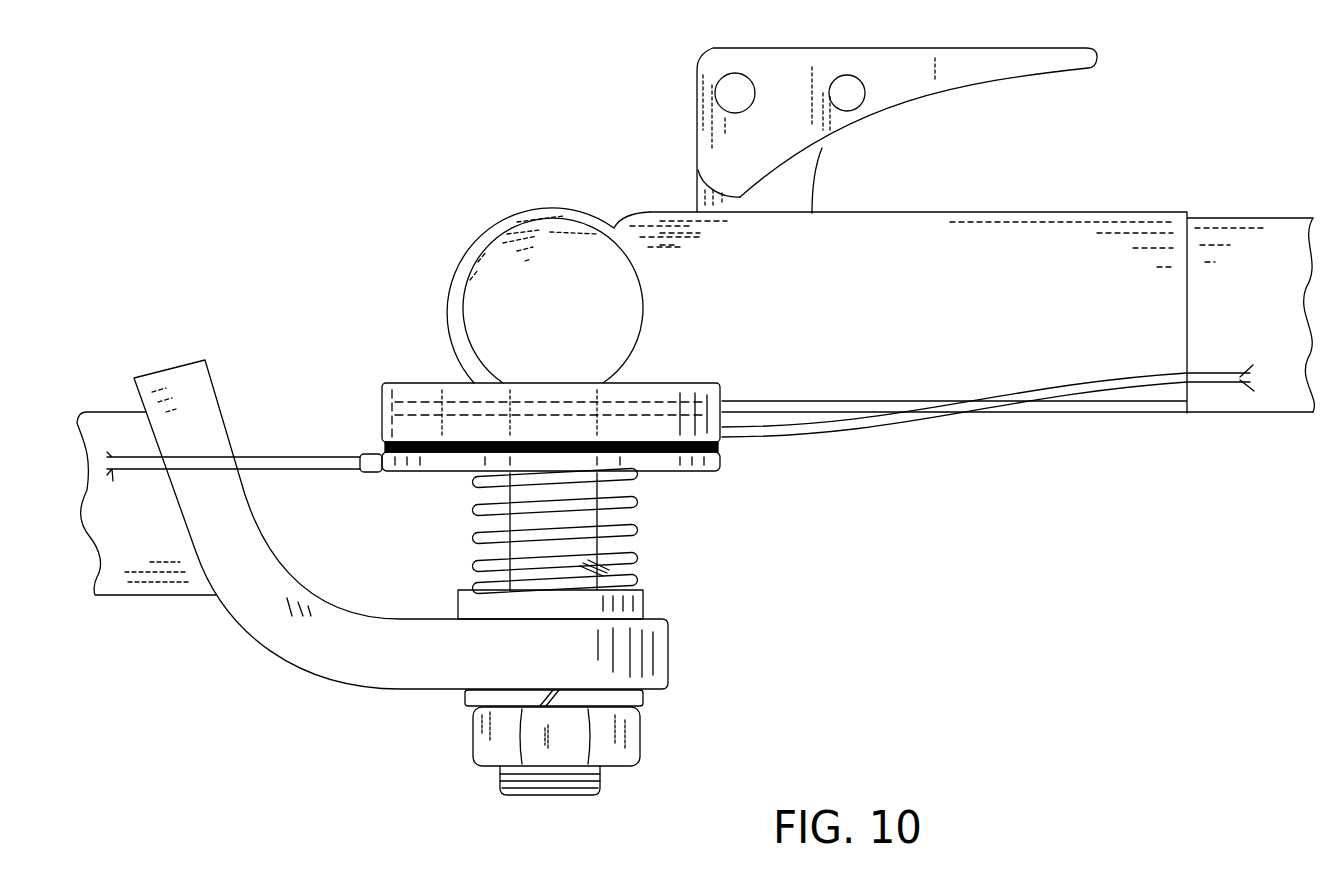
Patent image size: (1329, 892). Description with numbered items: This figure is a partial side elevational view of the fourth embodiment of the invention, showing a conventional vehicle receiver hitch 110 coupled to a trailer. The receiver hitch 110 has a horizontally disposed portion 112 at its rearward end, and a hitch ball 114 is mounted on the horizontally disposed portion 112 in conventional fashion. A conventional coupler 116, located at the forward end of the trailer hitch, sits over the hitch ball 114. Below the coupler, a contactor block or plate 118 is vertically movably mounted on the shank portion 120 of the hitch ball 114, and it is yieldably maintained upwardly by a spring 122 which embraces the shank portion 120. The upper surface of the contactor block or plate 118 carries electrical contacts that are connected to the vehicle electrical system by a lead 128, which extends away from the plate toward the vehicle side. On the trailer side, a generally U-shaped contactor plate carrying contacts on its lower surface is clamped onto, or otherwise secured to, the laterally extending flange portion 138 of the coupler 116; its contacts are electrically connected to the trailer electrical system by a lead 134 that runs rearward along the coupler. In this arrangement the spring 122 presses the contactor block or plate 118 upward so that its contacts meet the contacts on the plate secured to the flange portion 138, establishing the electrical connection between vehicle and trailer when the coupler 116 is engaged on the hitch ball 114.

The vehicle receiver hitch 110 is at (110, 370).
The horizontally disposed portion 112 is at (647, 653).
The hitch ball 114 is at (583, 568).
The coupler 116 is at (1025, 190).
The contactor block or plate 118 is at (730, 467).
The shank portion 120 is at (563, 533).
The spring 122 is at (472, 519).
The lead 128 is at (255, 457).
The lead 134 is at (1080, 387).
The flange portion 138 is at (828, 410).